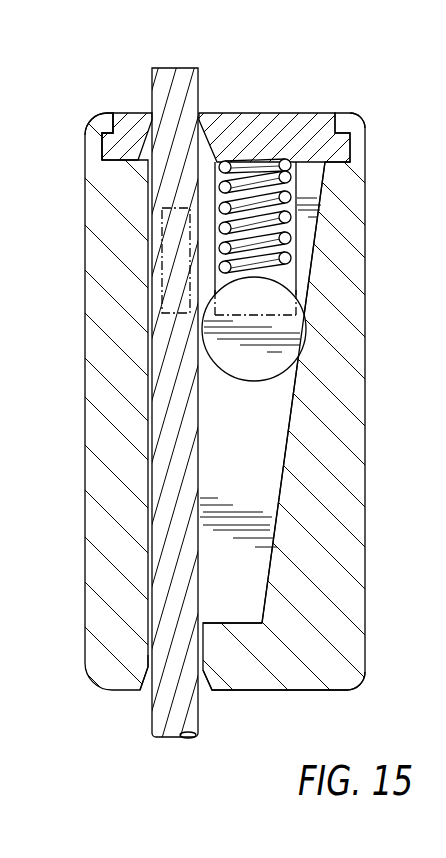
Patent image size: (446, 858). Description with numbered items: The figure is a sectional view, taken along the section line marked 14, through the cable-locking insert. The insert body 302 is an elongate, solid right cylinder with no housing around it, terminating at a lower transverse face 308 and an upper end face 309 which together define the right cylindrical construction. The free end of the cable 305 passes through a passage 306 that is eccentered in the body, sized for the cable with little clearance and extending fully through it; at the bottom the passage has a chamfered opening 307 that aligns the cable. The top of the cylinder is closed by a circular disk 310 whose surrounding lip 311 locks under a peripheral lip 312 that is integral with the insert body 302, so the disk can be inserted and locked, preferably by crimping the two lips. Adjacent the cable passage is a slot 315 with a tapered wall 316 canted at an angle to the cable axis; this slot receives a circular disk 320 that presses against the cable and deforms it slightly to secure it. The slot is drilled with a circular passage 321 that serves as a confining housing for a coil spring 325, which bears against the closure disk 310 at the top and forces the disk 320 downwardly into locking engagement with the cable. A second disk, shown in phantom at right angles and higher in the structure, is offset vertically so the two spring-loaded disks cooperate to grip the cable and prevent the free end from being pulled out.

The insert body 302 is at (363, 521).
The free end of the cable 305 is at (184, 67).
The cable passage 306 is at (150, 652).
The chamfered opening 307 is at (214, 688).
The lower transverse face 308 is at (330, 690).
The upper end face 309 is at (362, 120).
The circular disk 310 is at (298, 122).
The surrounding lip 311 is at (104, 146).
The peripheral lip 312 is at (106, 113).
The slot 315 is at (270, 458).
The tapered wall 316 is at (312, 274).
The circular disk 320 is at (258, 371).
The circular passage 321 is at (292, 192).
The coil spring 325 is at (297, 240).
The section line 14- 14 is at (40, 327).